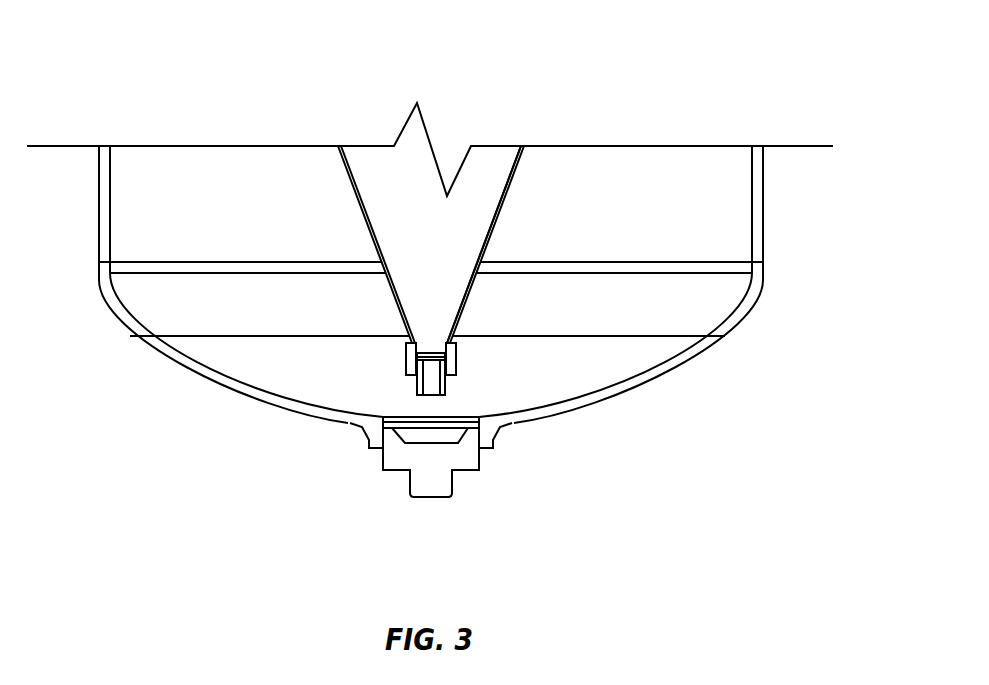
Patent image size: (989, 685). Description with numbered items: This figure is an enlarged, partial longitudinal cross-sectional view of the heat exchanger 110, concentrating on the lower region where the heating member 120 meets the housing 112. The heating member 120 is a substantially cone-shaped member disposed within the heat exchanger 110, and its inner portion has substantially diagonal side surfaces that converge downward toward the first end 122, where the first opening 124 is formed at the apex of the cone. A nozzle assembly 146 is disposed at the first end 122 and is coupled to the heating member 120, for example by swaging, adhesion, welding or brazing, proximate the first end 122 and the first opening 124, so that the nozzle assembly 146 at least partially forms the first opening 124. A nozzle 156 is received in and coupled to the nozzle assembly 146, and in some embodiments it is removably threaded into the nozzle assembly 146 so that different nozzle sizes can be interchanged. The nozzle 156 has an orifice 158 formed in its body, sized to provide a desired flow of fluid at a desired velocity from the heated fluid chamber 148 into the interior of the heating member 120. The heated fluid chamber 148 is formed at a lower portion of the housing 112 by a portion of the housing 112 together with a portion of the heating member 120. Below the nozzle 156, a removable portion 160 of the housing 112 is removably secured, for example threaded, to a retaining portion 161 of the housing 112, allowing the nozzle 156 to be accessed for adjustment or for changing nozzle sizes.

The heat exchanger 110 is at (200, 53).
The housing 112 is at (752, 191).
The heating member 120 is at (392, 294).
The first end 122 is at (463, 360).
The first opening 124 is at (452, 331).
The nozzle assembly 146 is at (410, 372).
The heated fluid chamber 148 is at (708, 325).
The nozzle 156 is at (418, 388).
The orifice 158 is at (432, 392).
The removable portion 160 is at (435, 477).
The retaining portion 161 is at (487, 440).